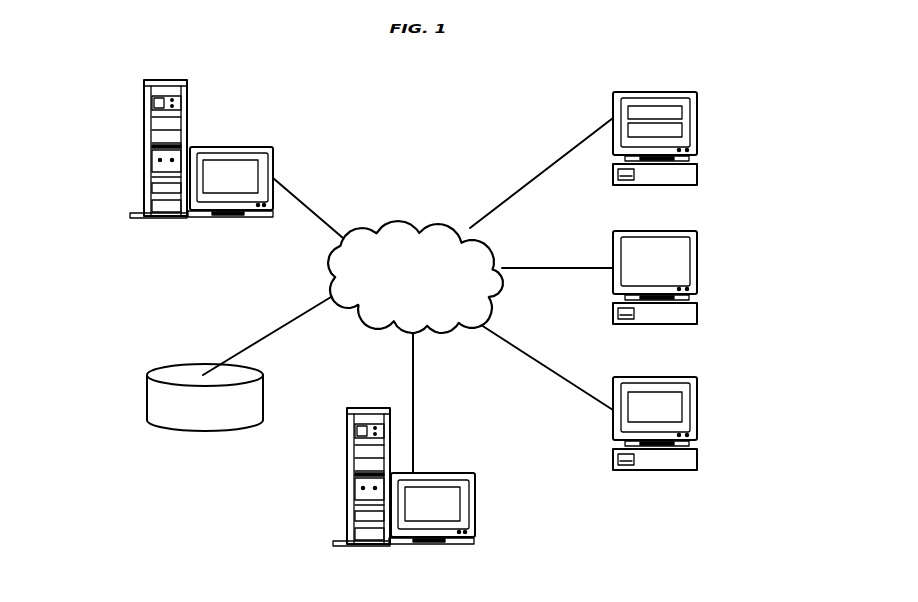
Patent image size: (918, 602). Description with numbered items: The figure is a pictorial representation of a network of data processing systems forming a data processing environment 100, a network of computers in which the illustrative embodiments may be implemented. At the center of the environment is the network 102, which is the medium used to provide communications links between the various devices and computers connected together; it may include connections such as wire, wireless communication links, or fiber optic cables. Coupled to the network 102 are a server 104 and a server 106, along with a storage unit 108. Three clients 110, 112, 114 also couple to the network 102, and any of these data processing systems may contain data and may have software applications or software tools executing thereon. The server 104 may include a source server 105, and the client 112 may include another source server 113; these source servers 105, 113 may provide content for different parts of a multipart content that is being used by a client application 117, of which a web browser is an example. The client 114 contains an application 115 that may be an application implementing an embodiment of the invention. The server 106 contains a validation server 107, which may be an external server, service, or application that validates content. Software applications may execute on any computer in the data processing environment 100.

The data processing environment 100 is at (95, 107).
The network 102 is at (415, 277).
The server 104 is at (201, 160).
The source server 105 is at (220, 160).
The server 106 is at (404, 488).
The validation server 107 is at (460, 506).
The storage unit 108 is at (205, 397).
The client 110 is at (655, 287).
The client 112 is at (655, 432).
The source server 113 is at (682, 404).
The client 114 is at (655, 148).
The application 115 is at (648, 105).
The client application 117 is at (682, 131).